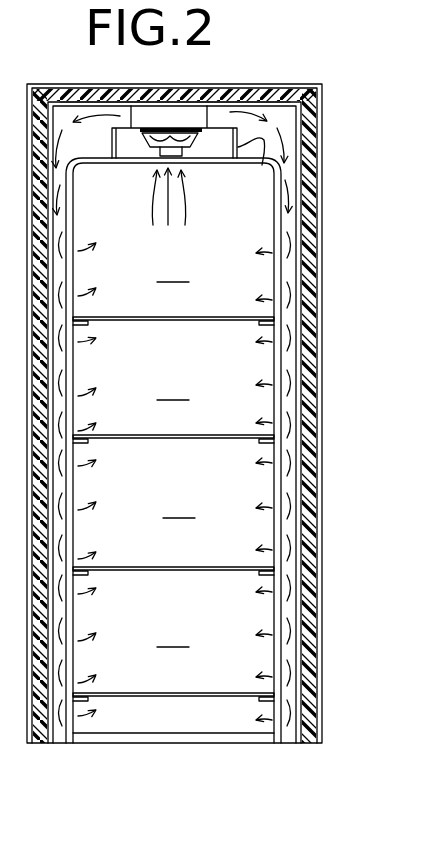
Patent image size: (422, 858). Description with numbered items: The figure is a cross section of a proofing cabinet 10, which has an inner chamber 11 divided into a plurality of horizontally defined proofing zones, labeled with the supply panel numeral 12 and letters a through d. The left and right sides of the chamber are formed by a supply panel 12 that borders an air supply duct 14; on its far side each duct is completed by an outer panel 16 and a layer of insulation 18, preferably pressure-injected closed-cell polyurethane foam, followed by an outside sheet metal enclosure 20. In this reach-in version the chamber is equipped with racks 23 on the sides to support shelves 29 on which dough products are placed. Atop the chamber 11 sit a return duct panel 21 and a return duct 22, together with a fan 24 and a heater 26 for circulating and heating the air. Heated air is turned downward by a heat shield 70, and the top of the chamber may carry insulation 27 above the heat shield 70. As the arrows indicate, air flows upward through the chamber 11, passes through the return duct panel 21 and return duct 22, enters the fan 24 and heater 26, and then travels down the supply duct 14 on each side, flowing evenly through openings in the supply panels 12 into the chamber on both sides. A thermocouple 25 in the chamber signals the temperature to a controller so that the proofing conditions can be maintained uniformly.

The proofing cabinet 10 is at (292, 78).
The inner chamber 11 is at (183, 713).
The supply panel 12 is at (76, 725).
The air supply duct 14 is at (63, 744).
The outer panel 16 is at (52, 745).
The layer of insulation 18 is at (42, 741).
The outside sheet metal enclosure 20 is at (28, 672).
The return duct panel 21 is at (257, 166).
The return duct 22 is at (215, 150).
The racks 23 is at (88, 326).
The fan 24 is at (186, 150).
The thermocouple 25 is at (84, 453).
The heater 26 is at (157, 130).
The insulation 27 is at (186, 96).
The shelves 29 is at (129, 316).
The heat shield 70 is at (216, 94).